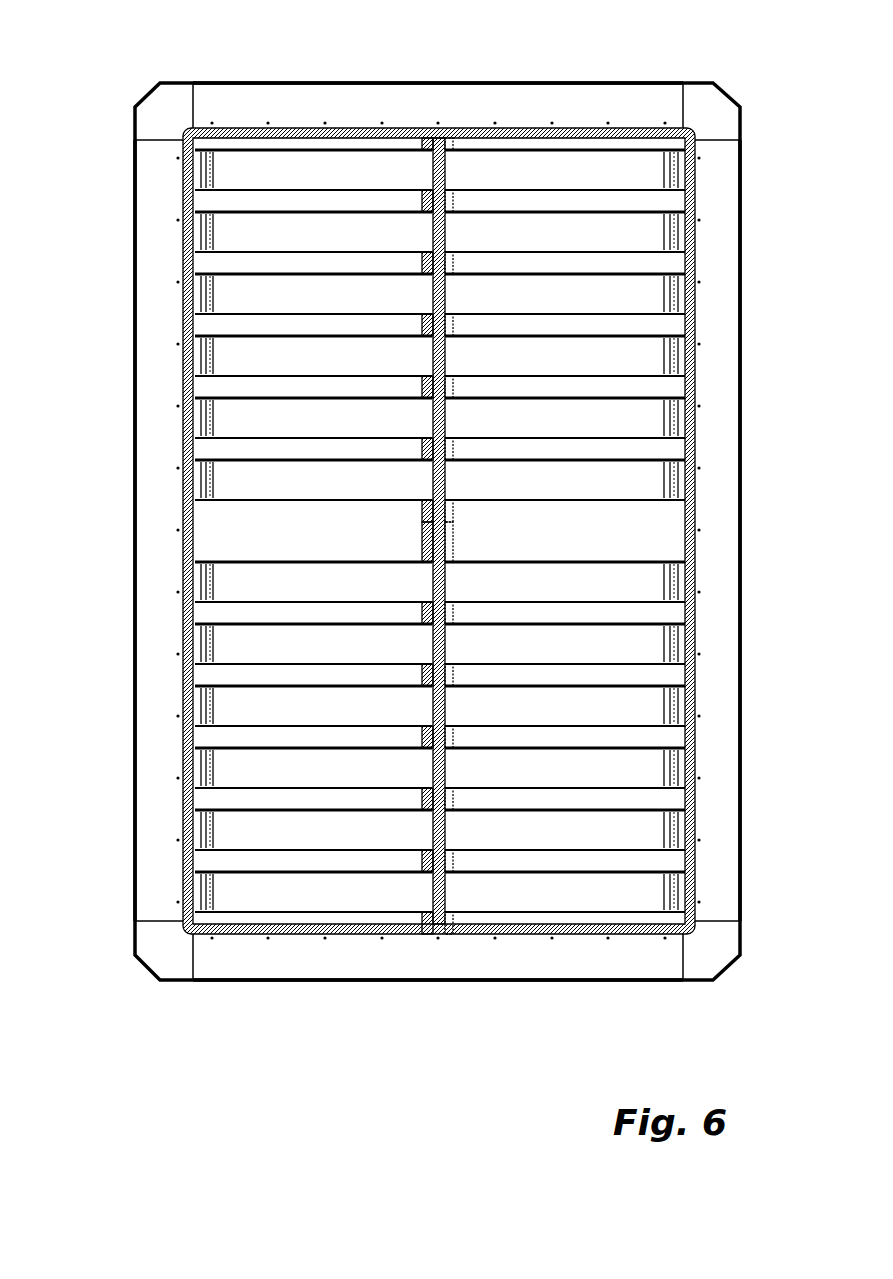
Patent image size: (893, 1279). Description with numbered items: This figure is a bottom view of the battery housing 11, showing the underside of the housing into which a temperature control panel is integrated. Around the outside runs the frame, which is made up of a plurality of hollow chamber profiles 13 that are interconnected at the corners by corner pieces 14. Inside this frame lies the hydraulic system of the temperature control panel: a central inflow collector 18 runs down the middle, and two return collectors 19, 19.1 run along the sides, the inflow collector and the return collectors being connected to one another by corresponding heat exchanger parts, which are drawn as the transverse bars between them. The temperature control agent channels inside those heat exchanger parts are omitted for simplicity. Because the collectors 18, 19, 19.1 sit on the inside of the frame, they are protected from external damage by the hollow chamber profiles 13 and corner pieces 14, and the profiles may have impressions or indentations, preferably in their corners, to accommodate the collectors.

The battery housing 11 is at (397, 524).
The hollow chamber profiles 13 is at (383, 116).
The corner pieces 14 is at (178, 121).
The central inflow collector 18 is at (449, 164).
The return collector 19 is at (681, 863).
The return collector 19.1 is at (198, 863).